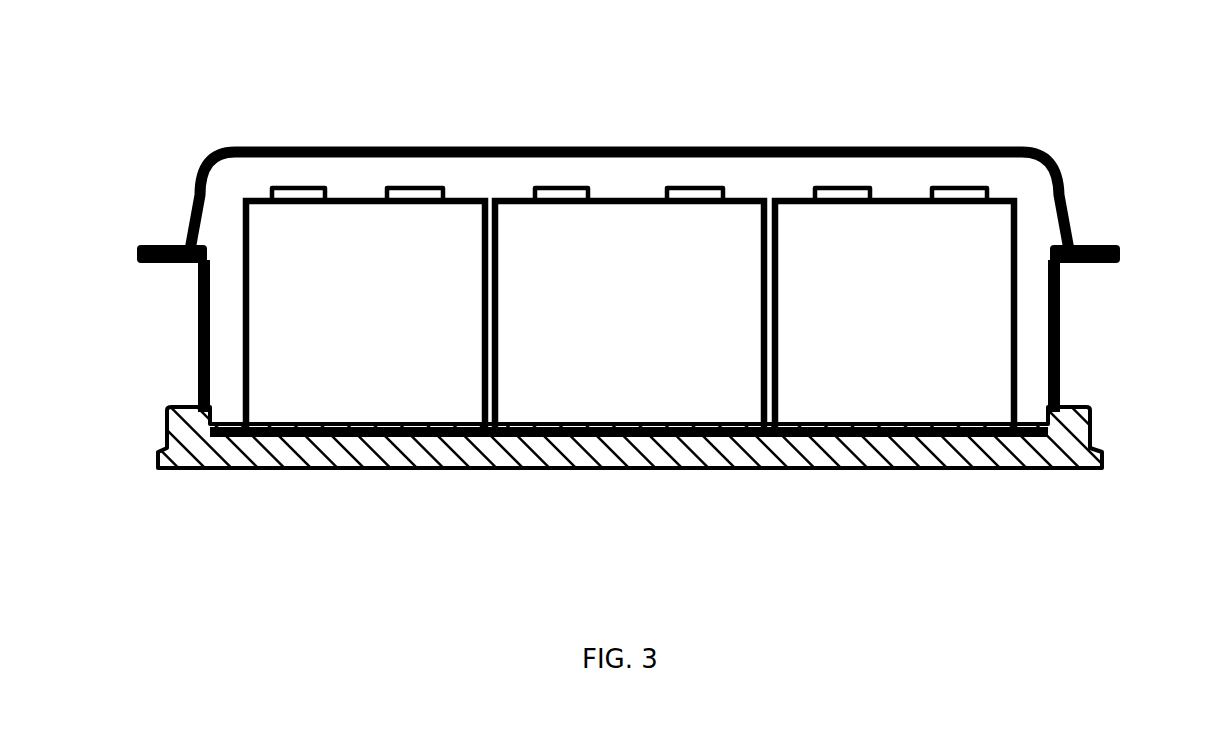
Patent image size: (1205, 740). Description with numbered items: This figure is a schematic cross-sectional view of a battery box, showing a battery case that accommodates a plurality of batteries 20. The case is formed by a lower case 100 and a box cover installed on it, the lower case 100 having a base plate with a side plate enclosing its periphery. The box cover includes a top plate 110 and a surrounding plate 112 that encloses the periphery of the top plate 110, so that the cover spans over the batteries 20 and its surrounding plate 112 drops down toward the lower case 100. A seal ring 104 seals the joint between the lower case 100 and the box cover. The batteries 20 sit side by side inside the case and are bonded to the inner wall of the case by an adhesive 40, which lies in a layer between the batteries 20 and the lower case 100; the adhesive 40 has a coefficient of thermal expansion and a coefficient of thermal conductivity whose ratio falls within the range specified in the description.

The battery 20 is at (590, 260).
The adhesive 40 is at (596, 433).
The lower case 100 is at (873, 465).
The seal ring 104 is at (1090, 248).
The top plate 110 is at (773, 148).
The surrounding plate 112 is at (193, 211).